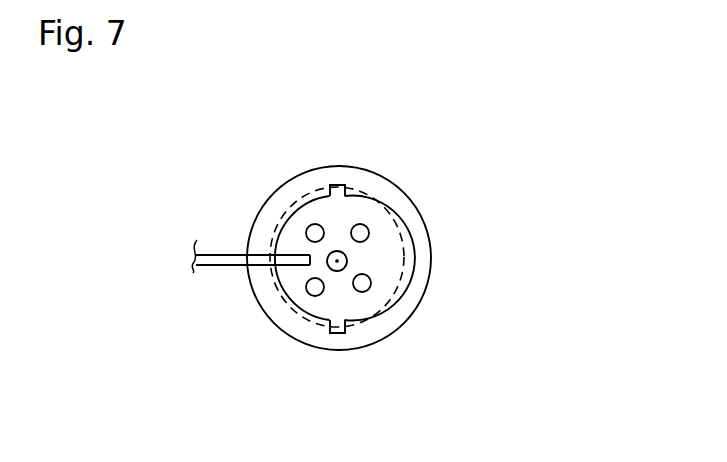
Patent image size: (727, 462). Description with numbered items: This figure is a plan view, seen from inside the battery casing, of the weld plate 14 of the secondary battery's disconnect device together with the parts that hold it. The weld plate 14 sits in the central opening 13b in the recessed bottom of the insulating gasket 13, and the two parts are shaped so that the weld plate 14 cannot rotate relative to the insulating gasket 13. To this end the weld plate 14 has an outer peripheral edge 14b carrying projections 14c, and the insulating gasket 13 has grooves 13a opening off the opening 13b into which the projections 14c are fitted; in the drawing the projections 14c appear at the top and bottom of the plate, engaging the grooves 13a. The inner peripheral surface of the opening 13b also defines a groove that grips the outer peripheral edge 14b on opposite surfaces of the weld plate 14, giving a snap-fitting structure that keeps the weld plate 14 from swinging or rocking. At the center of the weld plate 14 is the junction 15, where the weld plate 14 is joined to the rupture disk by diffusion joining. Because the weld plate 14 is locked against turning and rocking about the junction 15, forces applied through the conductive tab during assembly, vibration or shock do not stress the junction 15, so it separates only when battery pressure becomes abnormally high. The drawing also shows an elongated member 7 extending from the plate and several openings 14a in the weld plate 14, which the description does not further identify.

The lead wire 7 is at (227, 257).
The insulating gasket 13 is at (401, 202).
The grooves 13a is at (345, 192).
The opening 13b is at (397, 232).
The weld plate 14 is at (305, 220).
The through hole 14a is at (312, 292).
The outer peripheral edge 14b is at (393, 297).
The projection 14c is at (346, 187).
The junction 15 is at (347, 260).